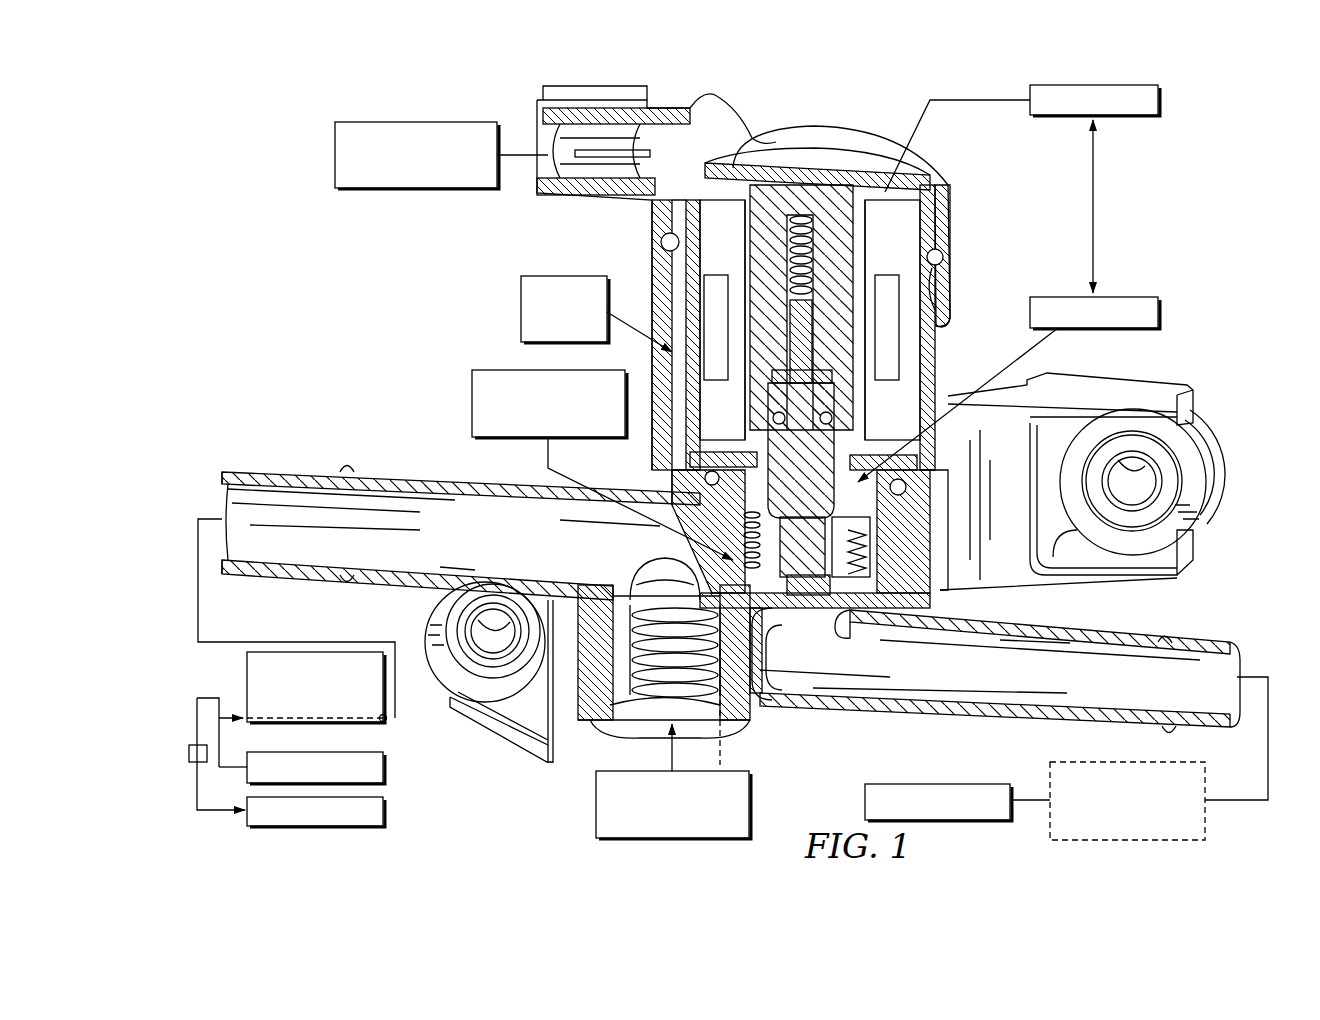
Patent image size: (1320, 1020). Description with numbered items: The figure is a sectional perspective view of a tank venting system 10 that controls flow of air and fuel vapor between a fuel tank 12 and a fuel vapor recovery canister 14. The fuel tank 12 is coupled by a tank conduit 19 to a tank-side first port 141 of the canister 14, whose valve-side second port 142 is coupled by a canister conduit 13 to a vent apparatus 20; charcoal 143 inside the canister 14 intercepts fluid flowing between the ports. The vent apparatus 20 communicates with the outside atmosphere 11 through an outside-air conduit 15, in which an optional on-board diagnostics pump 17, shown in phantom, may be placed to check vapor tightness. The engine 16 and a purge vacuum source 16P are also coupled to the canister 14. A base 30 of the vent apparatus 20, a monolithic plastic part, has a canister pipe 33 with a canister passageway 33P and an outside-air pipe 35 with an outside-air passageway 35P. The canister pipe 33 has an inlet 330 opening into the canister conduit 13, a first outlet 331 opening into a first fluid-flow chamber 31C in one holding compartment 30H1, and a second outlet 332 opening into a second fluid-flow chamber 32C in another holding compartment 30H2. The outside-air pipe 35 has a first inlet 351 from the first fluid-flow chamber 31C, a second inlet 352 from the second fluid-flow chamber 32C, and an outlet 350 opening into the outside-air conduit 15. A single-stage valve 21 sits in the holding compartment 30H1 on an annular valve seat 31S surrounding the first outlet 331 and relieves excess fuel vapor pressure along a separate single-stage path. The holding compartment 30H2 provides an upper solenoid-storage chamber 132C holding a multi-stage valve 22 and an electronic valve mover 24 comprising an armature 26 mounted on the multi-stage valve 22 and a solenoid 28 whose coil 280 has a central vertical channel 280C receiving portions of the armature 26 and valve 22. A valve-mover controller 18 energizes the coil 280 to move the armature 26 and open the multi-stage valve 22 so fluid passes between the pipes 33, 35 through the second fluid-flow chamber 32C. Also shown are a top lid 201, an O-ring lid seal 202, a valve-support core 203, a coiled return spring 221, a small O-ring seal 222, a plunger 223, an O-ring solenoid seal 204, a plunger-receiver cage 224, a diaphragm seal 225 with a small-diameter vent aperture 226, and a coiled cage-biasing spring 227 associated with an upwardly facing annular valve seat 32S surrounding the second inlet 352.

The tank venting system 10 is at (1224, 133).
The outside atmosphere 11 is at (970, 785).
The fuel tank 12 is at (385, 772).
The canister conduit 13 is at (200, 622).
The fuel vapor recovery canister 14 is at (350, 648).
The tank-side first port 141 is at (235, 715).
The valve-side second port 142 is at (388, 722).
The charcoal 143 is at (312, 730).
The outside-air conduit 15 is at (1238, 678).
The engine 16 is at (385, 815).
The purge vacuum source 16P is at (210, 794).
The on-board diagnostics (OBD) pump 17 is at (1085, 762).
The valve-mover controller 18 is at (335, 155).
The tank conduit 19 is at (230, 768).
The vent apparatus 20 is at (407, 321).
The top lid 201 is at (797, 126).
The O-ring lid seal 202 is at (940, 264).
The valve-support core 203 is at (813, 166).
The O-ring solenoid seal 204 is at (909, 494).
The single-stage valve 21 is at (596, 808).
The multi-stage valve 22 is at (472, 405).
The coiled return spring 221 is at (790, 270).
The small O-ring seal 222 is at (852, 418).
The plunger 223 is at (783, 360).
The plunger-receiver cage 224 is at (748, 488).
The diaphragm seal 225 is at (875, 600).
The small-diameter vent aperture 226 is at (808, 610).
The coiled cage-biasing spring 227 is at (905, 572).
The electronic valve mover 24 is at (521, 310).
The armature 26 is at (1160, 311).
The solenoid 28 is at (1160, 101).
The coil 280 is at (906, 254).
The central vertical channel 280C is at (843, 229).
The base 30 is at (667, 421).
The holding compartment 30H1 is at (612, 724).
The holding compartment 30H2 is at (676, 450).
The first fluid-flow chamber 31C is at (612, 672).
The annular valve seat 31S is at (690, 580).
The second fluid-flow chamber 32C is at (905, 545).
The upwardly facing annular valve seat 32S is at (790, 600).
The canister pipe 33 is at (405, 473).
The inlet 330 is at (226, 497).
The first outlet 331 is at (650, 560).
The second outlet 332 is at (735, 547).
The canister passageway 33P is at (256, 533).
The outside-air pipe 35 is at (859, 716).
The outlet 350 is at (1237, 688).
The first inlet 351 is at (780, 670).
The second inlet 352 is at (840, 632).
The outside-air passageway 35P is at (1208, 672).
The upper solenoid-storage chamber 132C is at (658, 225).